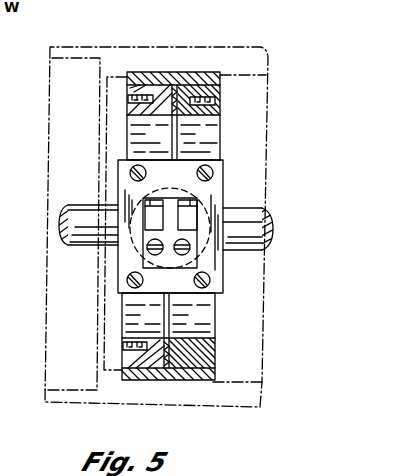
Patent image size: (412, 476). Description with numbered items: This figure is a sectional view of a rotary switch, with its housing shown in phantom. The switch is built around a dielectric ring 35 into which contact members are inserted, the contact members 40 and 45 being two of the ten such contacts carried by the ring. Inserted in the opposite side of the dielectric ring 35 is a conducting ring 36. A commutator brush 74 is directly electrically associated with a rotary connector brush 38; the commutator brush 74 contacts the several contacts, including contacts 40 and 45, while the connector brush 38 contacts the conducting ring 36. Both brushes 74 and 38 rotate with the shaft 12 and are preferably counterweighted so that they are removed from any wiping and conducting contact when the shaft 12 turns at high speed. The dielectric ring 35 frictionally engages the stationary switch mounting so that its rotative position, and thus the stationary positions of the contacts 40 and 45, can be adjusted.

The shaft 12 is at (72, 204).
The dielectric ring 35 is at (167, 72).
The conducting ring 36 is at (223, 116).
The rotary connector brush 38 is at (212, 251).
The contact member 40 is at (128, 112).
The contact member 45 is at (128, 362).
The commutator brush 74 is at (146, 250).